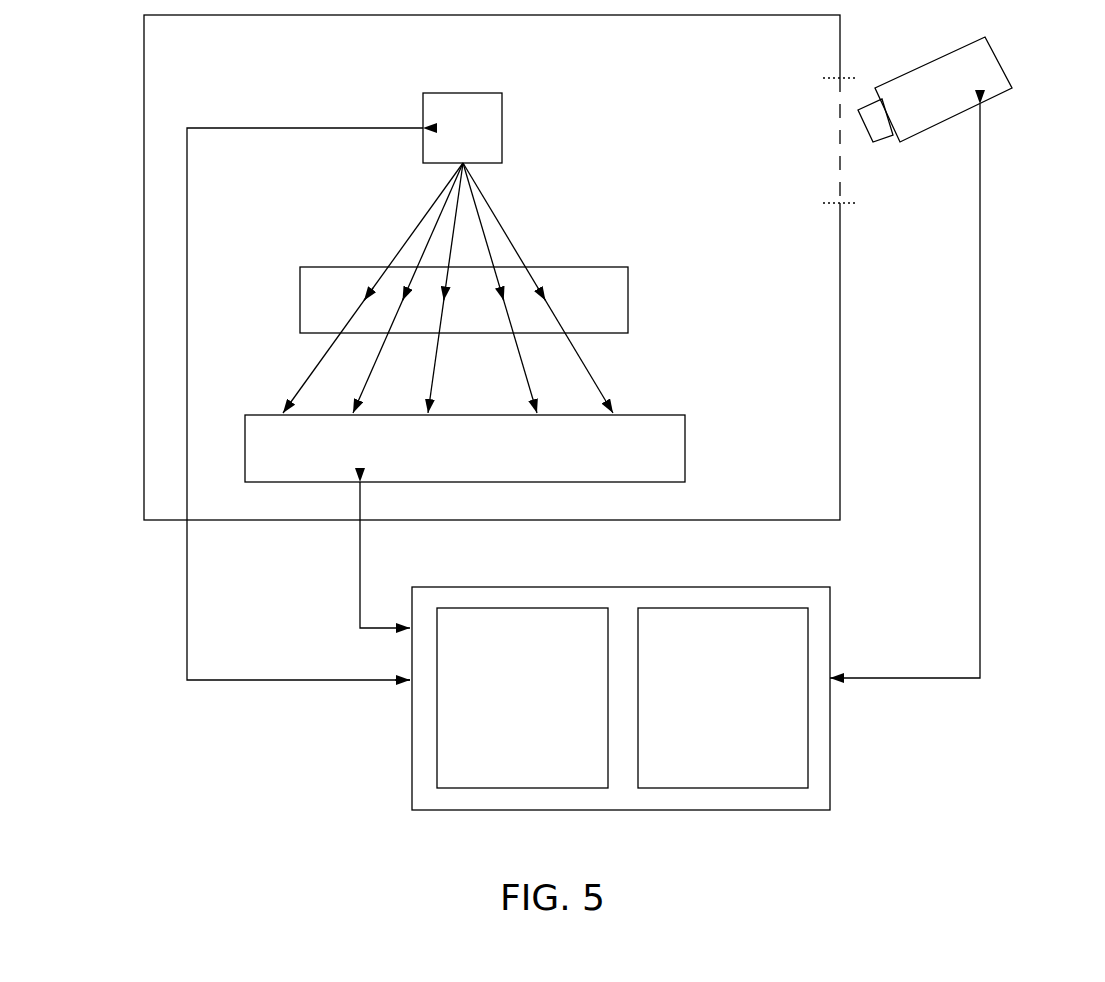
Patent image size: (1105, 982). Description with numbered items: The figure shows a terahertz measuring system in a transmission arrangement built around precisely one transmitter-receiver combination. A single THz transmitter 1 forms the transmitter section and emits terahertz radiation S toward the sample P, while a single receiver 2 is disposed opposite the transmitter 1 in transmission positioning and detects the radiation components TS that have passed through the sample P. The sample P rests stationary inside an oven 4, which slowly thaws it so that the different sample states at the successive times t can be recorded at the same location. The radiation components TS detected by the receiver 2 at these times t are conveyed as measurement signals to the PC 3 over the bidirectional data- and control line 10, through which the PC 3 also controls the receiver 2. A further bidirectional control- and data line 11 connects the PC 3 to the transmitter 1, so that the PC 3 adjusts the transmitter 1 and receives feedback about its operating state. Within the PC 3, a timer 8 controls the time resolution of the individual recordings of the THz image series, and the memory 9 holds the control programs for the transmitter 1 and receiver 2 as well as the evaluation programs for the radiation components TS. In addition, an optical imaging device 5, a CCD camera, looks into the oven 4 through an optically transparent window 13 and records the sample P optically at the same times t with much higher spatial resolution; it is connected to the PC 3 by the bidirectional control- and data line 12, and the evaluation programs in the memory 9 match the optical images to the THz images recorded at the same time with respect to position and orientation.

The THz transmitter 1 is at (462, 128).
The receiver 2 is at (465, 448).
The PC 3 is at (834, 600).
The oven 4 is at (143, 130).
The optical imaging device 5 is at (935, 89).
The timer 8 is at (522, 698).
The memory 9 is at (723, 698).
The bidirectional data- and control line 10 is at (365, 553).
The bidirectional control- and data line 11 is at (195, 585).
The bidirectional control- and data line 12 is at (985, 497).
The optically transparent window 13 is at (836, 98).
The THz radiation S is at (495, 203).
The sample P is at (464, 300).
The radiation components TS is at (607, 381).
The times t is at (630, 295).